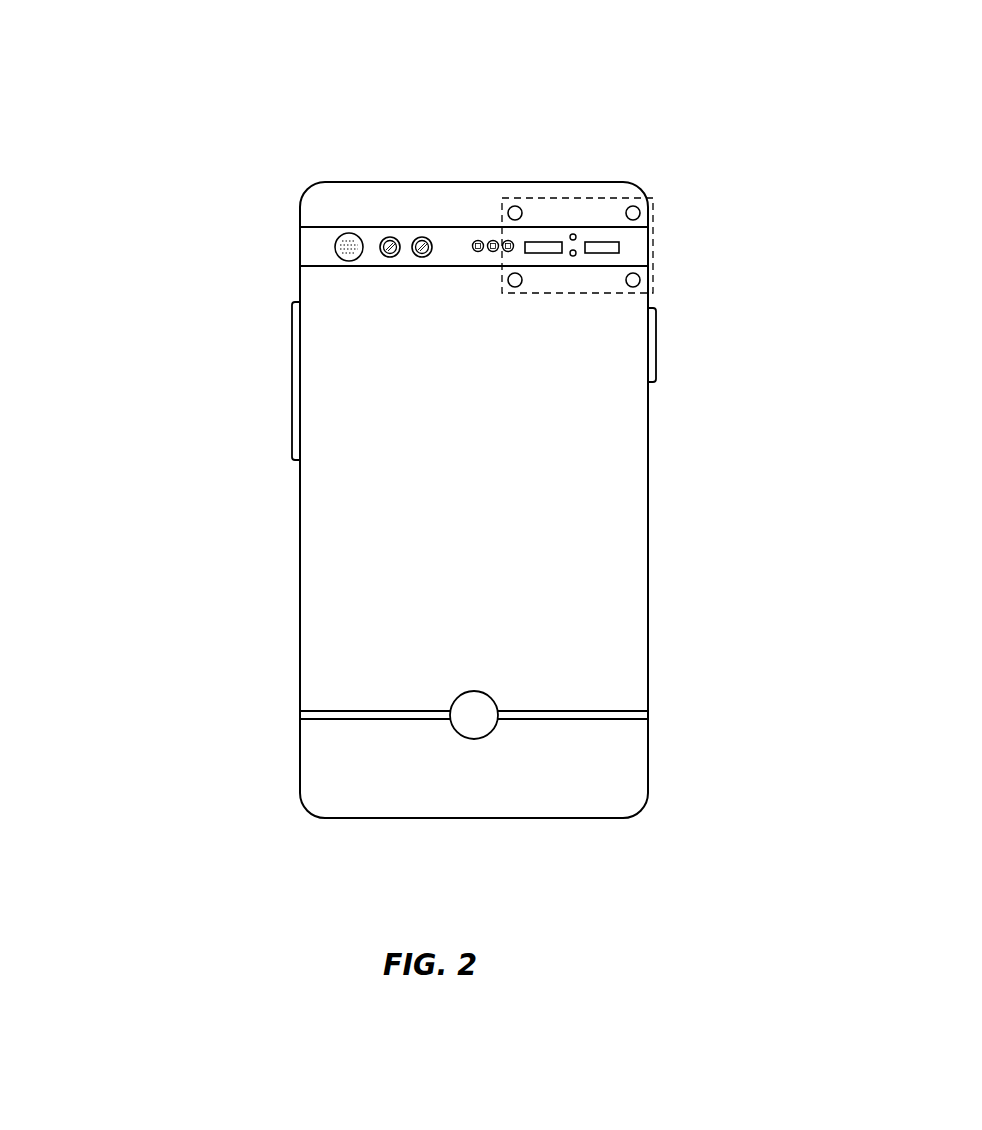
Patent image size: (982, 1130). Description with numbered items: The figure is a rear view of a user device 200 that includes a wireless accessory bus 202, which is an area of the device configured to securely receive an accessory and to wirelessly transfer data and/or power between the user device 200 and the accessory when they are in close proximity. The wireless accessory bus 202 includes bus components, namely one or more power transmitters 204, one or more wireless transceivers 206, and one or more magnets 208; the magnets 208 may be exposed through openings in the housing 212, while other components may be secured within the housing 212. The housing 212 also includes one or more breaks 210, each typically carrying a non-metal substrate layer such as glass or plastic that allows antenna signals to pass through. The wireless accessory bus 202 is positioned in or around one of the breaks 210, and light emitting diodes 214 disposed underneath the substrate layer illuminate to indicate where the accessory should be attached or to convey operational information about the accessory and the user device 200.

The user device 200 is at (333, 27).
The wireless accessory bus 202 is at (604, 188).
The power transmitter 204 is at (561, 266).
The wireless transceiver 206 is at (634, 261).
The magnet 208 is at (515, 192).
The break 210 is at (293, 259).
The housing 212 is at (663, 485).
The light emitting diode 214 is at (463, 231).